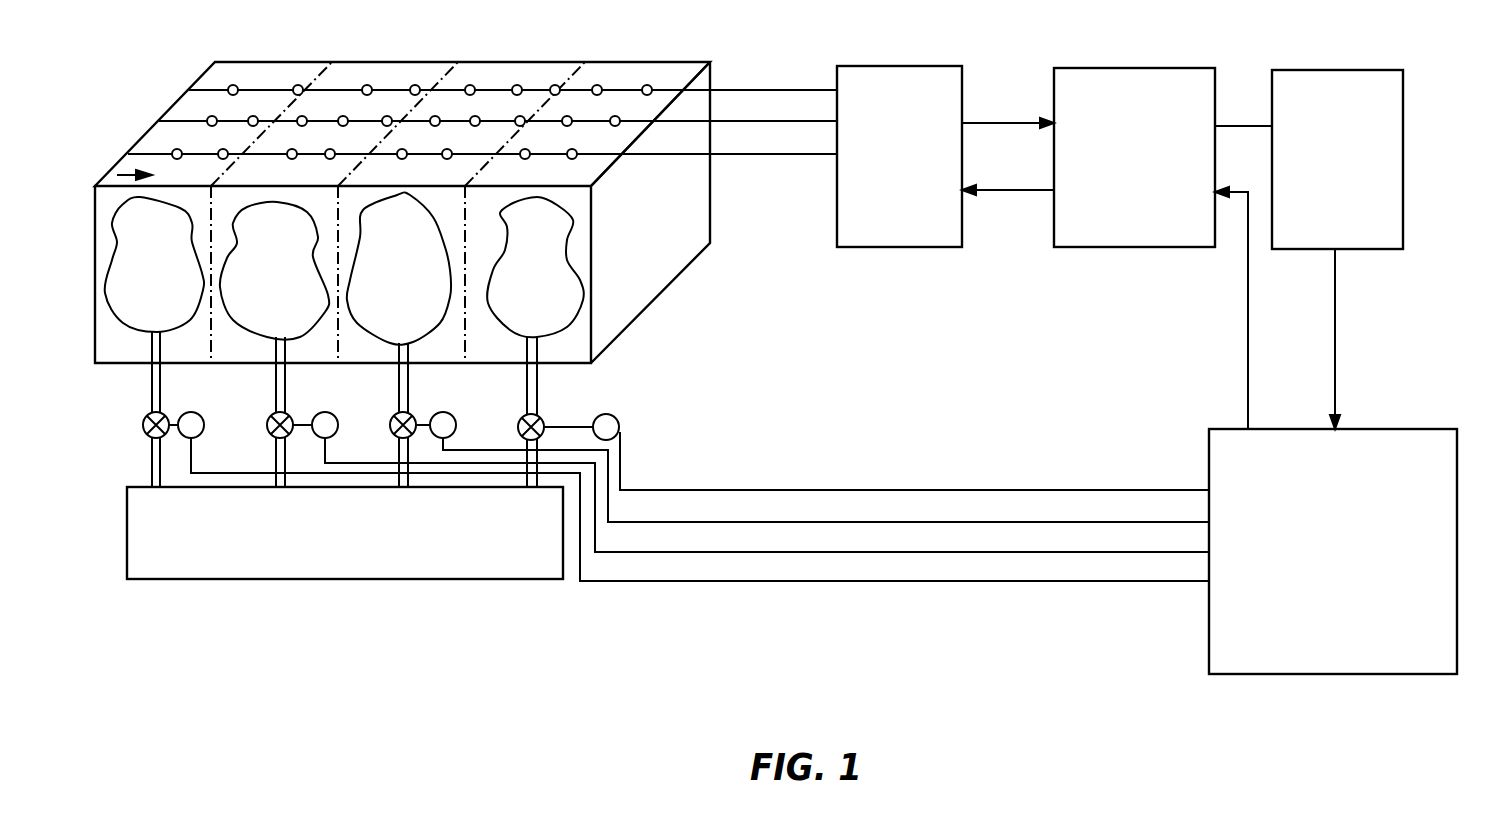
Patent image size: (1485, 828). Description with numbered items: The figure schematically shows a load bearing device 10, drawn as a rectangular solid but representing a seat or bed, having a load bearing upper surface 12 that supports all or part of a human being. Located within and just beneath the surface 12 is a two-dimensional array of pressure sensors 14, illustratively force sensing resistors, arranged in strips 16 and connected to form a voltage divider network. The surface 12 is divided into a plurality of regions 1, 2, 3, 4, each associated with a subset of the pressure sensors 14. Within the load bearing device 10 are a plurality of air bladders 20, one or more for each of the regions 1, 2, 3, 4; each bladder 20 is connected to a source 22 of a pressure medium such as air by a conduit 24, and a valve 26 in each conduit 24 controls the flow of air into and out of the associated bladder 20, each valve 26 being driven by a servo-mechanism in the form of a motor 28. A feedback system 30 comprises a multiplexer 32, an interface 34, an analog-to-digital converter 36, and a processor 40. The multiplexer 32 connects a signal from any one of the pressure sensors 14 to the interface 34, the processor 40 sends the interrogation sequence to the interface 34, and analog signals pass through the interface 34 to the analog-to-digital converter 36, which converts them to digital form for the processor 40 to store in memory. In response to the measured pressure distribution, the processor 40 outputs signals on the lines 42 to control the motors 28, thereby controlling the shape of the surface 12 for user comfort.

The load bearing device 10 is at (655, 271).
The load bearing upper surface 12 is at (117, 175).
The pressure sensors 14 is at (236, 85).
The strips 16 is at (622, 89).
The air bladders 20 is at (543, 318).
The source of pressure medium 22 is at (442, 580).
The conduit 24 is at (536, 386).
The valve 26 is at (542, 420).
The motor 28 is at (619, 420).
The feedback system 30 is at (1048, 319).
The multiplexer 32 is at (877, 248).
The interface 34 is at (1160, 249).
The analog-to-digital converter 36 is at (1403, 187).
The processor 40 is at (1340, 676).
The lines 42 is at (918, 489).
The region 1 is at (242, 113).
The region 2 is at (312, 113).
The region 3 is at (446, 113).
The region 4 is at (569, 113).